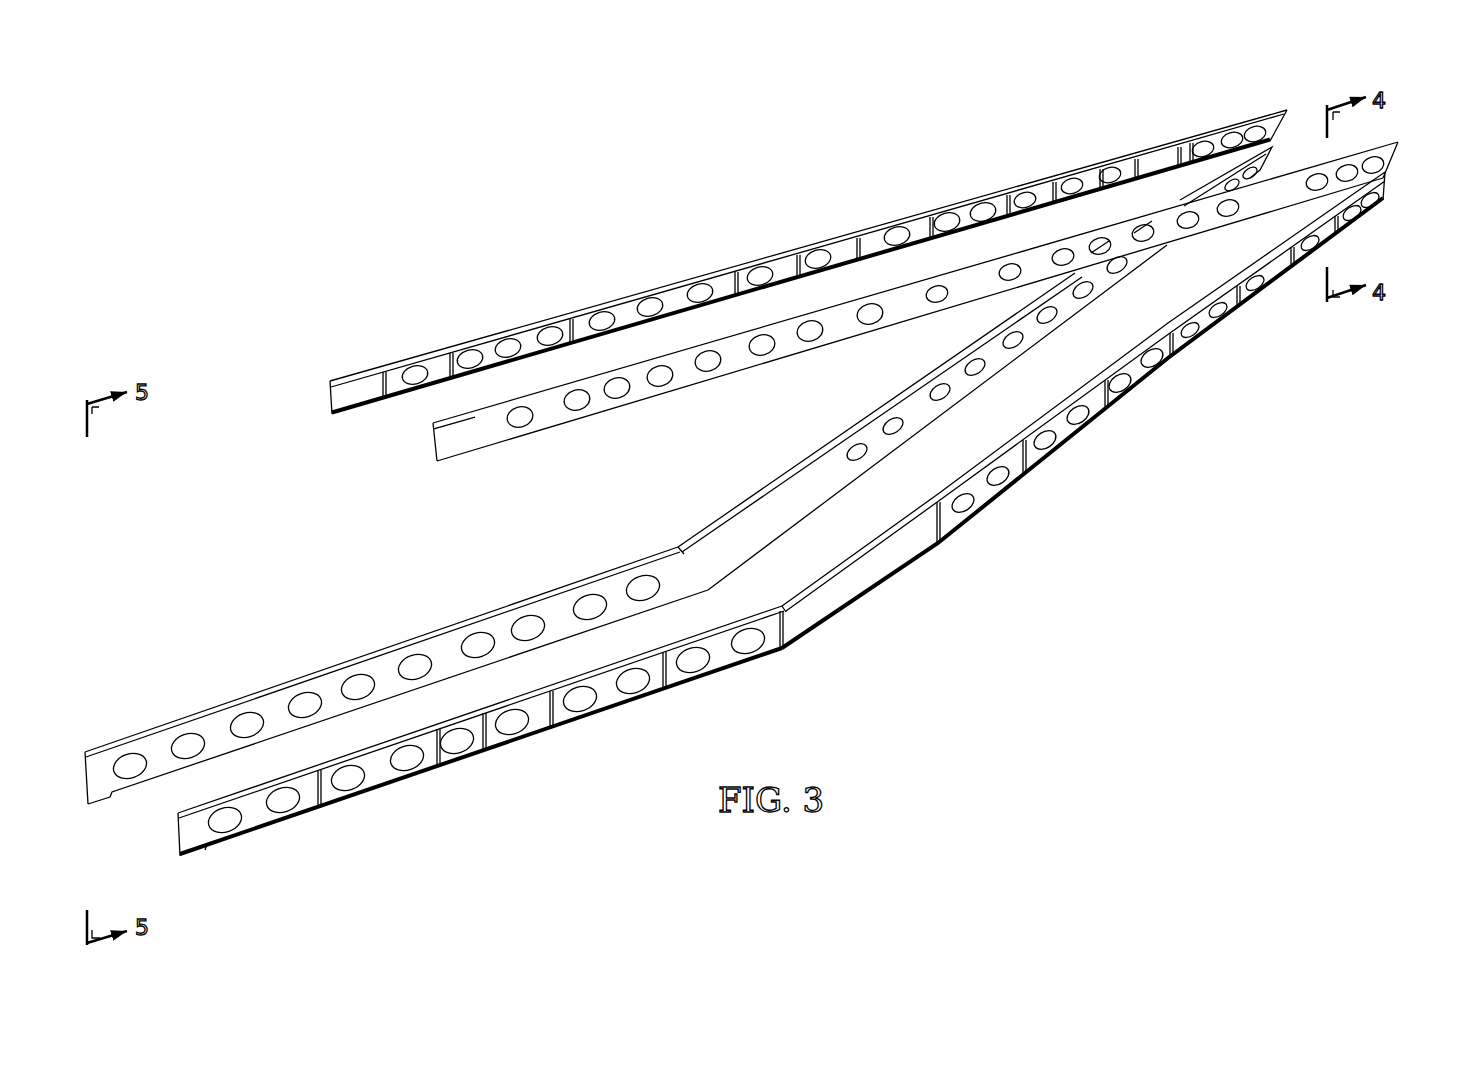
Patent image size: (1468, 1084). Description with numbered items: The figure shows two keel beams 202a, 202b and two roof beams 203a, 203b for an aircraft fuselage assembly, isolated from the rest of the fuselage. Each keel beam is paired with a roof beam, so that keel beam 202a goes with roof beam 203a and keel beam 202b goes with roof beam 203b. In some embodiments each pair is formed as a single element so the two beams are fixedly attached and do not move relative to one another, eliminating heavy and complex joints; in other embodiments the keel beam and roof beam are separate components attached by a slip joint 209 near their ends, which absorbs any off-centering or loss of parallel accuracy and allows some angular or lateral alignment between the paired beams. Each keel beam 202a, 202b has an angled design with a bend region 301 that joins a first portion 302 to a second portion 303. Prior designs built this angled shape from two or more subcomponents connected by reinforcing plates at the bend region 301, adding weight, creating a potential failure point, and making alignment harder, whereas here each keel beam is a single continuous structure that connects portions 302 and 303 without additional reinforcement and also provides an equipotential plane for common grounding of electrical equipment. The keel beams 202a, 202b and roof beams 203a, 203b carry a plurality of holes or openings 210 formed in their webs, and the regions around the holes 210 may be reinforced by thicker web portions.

The keel beam 202a is at (222, 706).
The keel beam 202b is at (258, 833).
The roof beam 203a is at (362, 378).
The roof beam 203b is at (458, 453).
The slip joint 209 is at (1270, 141).
The holes or openings 210 is at (760, 272).
The bend region 301 is at (677, 539).
The portion of keel beam 302 is at (424, 626).
The portion of keel beam 303 is at (886, 385).